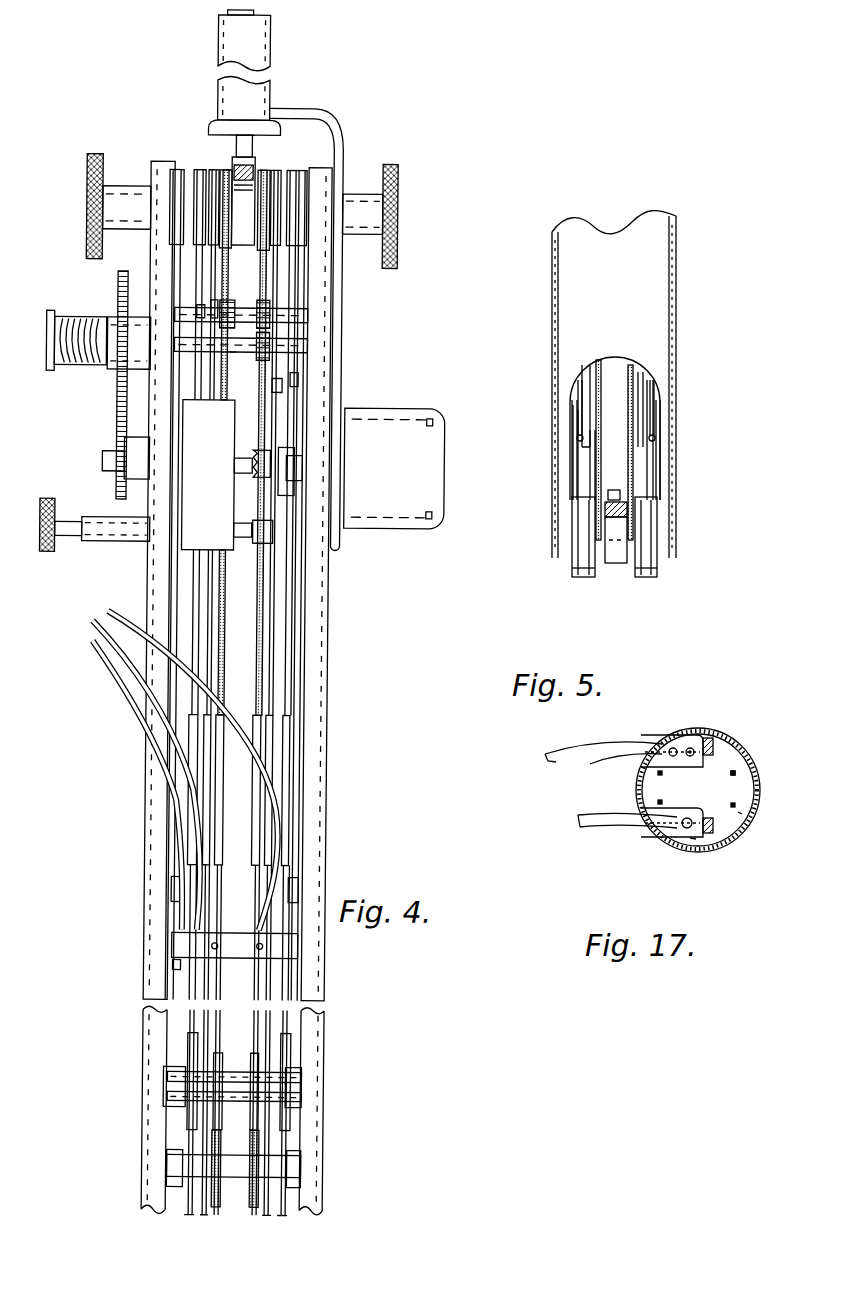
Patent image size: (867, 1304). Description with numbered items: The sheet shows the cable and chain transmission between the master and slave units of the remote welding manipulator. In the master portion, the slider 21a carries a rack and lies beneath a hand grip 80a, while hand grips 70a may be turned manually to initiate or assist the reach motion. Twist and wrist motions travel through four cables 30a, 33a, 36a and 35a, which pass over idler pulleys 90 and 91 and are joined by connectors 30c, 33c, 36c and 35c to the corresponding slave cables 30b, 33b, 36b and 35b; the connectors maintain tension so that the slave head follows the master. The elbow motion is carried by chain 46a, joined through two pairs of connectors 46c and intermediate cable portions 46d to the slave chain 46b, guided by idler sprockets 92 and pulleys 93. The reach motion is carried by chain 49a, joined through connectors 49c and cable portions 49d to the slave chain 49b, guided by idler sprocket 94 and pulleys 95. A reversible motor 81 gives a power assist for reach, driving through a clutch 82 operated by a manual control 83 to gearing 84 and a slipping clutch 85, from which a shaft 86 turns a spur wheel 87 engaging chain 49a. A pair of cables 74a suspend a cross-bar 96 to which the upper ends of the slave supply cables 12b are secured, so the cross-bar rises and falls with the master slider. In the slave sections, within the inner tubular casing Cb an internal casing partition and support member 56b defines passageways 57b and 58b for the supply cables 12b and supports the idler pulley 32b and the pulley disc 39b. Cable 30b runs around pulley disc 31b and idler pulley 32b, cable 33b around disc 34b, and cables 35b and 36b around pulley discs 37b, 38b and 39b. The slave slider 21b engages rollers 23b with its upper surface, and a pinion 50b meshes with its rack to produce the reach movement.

In FIG. 4, the hand grip 80a is at (262, 52).
In FIG. 4, the slider 21a is at (228, 170).
In FIG. 4, the hand grips 70a is at (124, 192).
In FIG. 4, the cables 74a is at (176, 573).
In FIG. 4, the cable 30a is at (193, 603).
In FIG. 4, the cable 33a is at (211, 592).
In FIG. 4, the chain 46a is at (222, 646).
In FIG. 4, the chain 49a is at (263, 583).
In FIG. 4, the cable 36a is at (275, 622).
In FIG. 4, the cable 35a is at (290, 658).
In FIG. 4, the connector 30c is at (195, 765).
In FIG. 4, the connector 33c is at (210, 798).
In FIG. 4, the connectors 46c is at (222, 748).
In FIG. 4, the connectors 49c is at (260, 739).
In FIG. 4, the connector 36c is at (273, 753).
In FIG. 4, the connector 35c is at (290, 792).
In FIG. 4, the idler pulleys 90 is at (211, 302).
In FIG. 4, the idler sprockets 92 is at (239, 307).
In FIG. 4, the idler sprocket 94 is at (263, 302).
In FIG. 4, the spur wheel 87 is at (263, 346).
In FIG. 4, the shaft 86 is at (229, 352).
In FIG. 4, the slipping clutch 85 is at (71, 328).
In FIG. 4, the gearing 84 is at (113, 432).
In FIG. 4, the manual control 83 is at (46, 504).
In FIG. 4, the clutch 82 is at (251, 462).
In FIG. 4, the motor 81 is at (386, 414).
In FIG. 4, the supply cables 12b is at (90, 636).
In FIG. 5, the supply cables 12b is at (651, 414).
In FIG. 17, the supply cables 12b is at (588, 768).
In FIG. 4, the cross-bar 96 is at (194, 947).
In FIG. 4, the intermediate cable portions 46d is at (200, 1022).
In FIG. 4, the intermediate cable portions 49d is at (263, 1018).
In FIG. 4, the idler pulleys 91 is at (204, 1068).
In FIG. 4, the pulleys 93 is at (228, 1142).
In FIG. 4, the pulleys 95 is at (256, 1192).
In FIG. 5, the inner tubular casing Cb is at (664, 316).
In FIG. 17, the inner tubular casing Cb is at (650, 833).
In FIG. 5, the passageway 57b is at (585, 364).
In FIG. 17, the passageway 57b is at (690, 742).
In FIG. 5, the chain 49b is at (624, 368).
In FIG. 17, the chain 49b is at (735, 805).
In FIG. 5, the chain 46b is at (597, 400).
In FIG. 17, the chain 46b is at (735, 774).
In FIG. 5, the passageway 58b is at (656, 437).
In FIG. 17, the passageway 58b is at (693, 838).
In FIG. 5, the internal casing partition and support member 56b is at (577, 436).
In FIG. 17, the internal casing partition and support member 56b is at (678, 812).
In FIG. 5, the cable 30b is at (573, 467).
In FIG. 17, the cable 30b is at (723, 745).
In FIG. 5, the cable 36b is at (655, 455).
In FIG. 17, the cable 36b is at (740, 813).
In FIG. 5, the rollers 23b is at (614, 490).
In FIG. 5, the cable 33b is at (592, 482).
In FIG. 17, the cable 33b is at (742, 753).
In FIG. 5, the cable 35b is at (660, 480).
In FIG. 17, the cable 35b is at (723, 835).
In FIG. 5, the pulley disc 31b is at (578, 565).
In FIG. 5, the pulley disc 38b is at (652, 570).
In FIG. 5, the disc 34b is at (582, 585).
In FIG. 5, the pulley disc 37b is at (647, 572).
In FIG. 5, the pinion 50b is at (617, 565).
In FIG. 5, the slider 21b is at (610, 560).
In FIG. 17, the idler pulley 32b is at (712, 750).
In FIG. 17, the pulley disc 39b is at (712, 822).